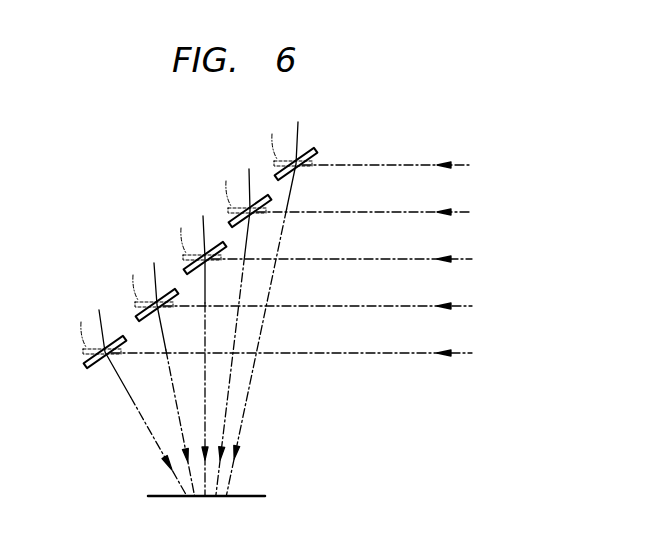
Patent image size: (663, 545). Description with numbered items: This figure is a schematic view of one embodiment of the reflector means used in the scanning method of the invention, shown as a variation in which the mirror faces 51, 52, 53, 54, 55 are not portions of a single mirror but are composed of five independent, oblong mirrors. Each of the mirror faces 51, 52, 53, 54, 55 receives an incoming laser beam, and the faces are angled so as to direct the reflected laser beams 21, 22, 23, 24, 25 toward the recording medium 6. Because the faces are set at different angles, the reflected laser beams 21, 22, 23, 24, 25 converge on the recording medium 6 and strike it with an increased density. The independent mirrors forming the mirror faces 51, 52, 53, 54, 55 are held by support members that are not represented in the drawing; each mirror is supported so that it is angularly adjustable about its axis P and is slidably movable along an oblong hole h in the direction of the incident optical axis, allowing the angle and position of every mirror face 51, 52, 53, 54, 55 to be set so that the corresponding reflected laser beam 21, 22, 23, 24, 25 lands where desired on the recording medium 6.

The recording medium 6 is at (259, 496).
The reflected laser beam 21 is at (400, 165).
The reflected laser beam 22 is at (377, 212).
The reflected laser beam 23 is at (354, 259).
The reflected laser beam 24 is at (330, 306).
The reflected laser beam 25 is at (304, 353).
The mirror face 51 is at (313, 156).
The mirror face 52 is at (239, 221).
The mirror face 53 is at (190, 267).
The mirror face 54 is at (143, 312).
The mirror face 55 is at (92, 371).